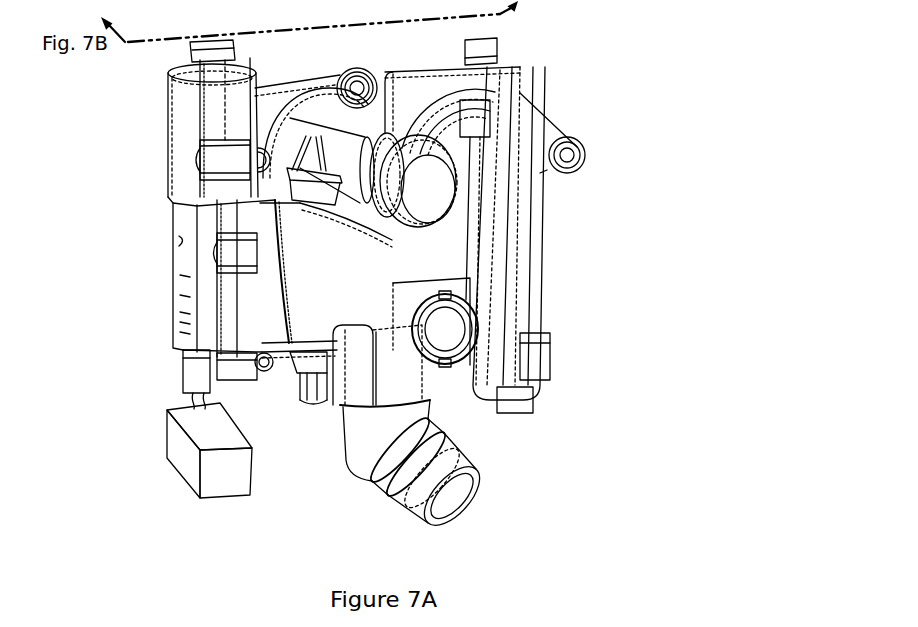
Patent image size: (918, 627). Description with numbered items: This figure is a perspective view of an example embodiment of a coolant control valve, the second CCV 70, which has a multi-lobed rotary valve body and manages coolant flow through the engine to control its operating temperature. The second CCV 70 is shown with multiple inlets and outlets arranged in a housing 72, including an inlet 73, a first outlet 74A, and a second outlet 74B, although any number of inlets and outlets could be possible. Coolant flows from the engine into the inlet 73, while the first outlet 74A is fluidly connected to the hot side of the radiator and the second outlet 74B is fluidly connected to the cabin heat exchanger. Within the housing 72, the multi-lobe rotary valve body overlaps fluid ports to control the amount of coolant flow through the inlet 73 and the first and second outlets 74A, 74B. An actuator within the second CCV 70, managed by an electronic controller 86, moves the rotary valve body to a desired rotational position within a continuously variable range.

The second CCV 70 is at (376, 225).
The housing 72 is at (361, 395).
The inlet 73 is at (453, 503).
The first outlet 74A is at (435, 205).
The second outlet 74B is at (450, 345).
The electronic controller 86 is at (238, 486).